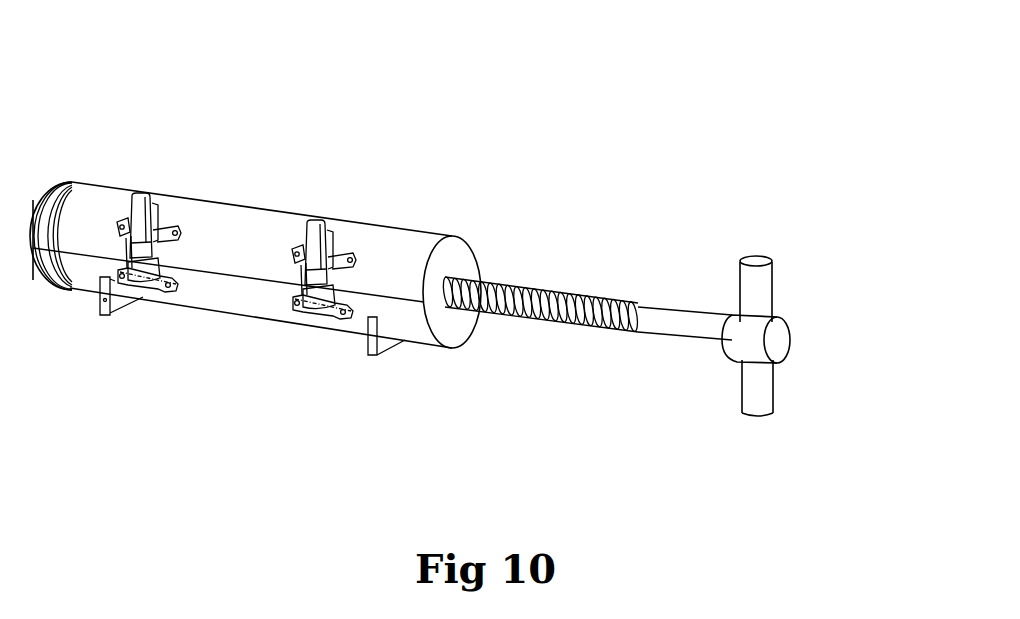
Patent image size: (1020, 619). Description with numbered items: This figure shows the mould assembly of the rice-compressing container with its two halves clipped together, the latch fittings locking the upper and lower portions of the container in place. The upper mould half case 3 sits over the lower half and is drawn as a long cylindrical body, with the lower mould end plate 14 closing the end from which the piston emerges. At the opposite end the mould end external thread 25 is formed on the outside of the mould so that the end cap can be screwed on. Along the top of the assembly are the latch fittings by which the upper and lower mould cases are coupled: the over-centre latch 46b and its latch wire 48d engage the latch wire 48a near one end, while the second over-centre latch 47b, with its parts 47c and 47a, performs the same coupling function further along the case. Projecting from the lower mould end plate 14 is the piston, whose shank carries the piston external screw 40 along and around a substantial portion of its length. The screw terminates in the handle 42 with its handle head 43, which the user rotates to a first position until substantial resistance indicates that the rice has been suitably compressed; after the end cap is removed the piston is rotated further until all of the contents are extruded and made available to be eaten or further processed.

The upper mould half case 3 is at (236, 213).
The lower mould end plate 14 is at (457, 253).
The mould end external thread 25 is at (75, 177).
The over-centre latch 46b is at (138, 203).
The latch wire 48d is at (165, 233).
The latch wire 48a is at (152, 290).
The over-centre latch 47b is at (317, 242).
The over-centre latch 47c is at (347, 252).
The over-centre latch 47a is at (310, 312).
The piston external screw 40 is at (590, 297).
The handle 42 is at (762, 278).
The handle head 43 is at (783, 328).